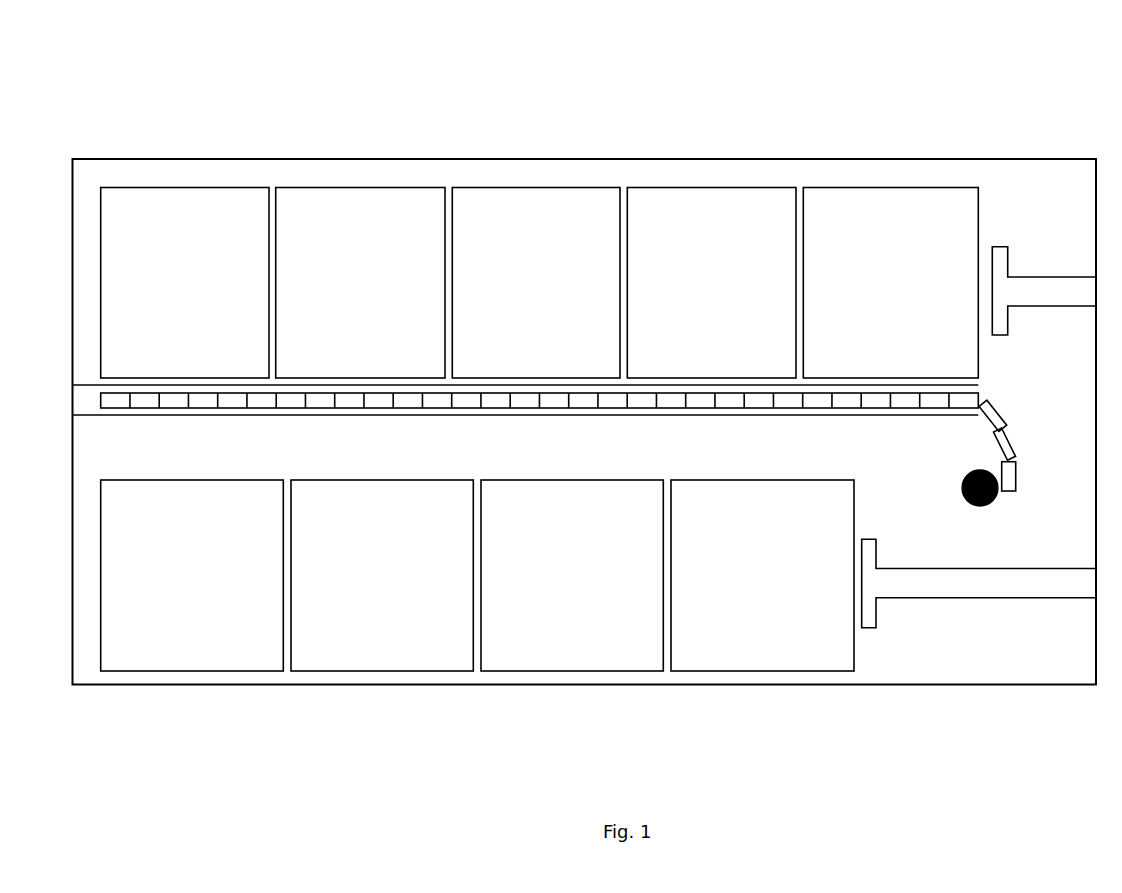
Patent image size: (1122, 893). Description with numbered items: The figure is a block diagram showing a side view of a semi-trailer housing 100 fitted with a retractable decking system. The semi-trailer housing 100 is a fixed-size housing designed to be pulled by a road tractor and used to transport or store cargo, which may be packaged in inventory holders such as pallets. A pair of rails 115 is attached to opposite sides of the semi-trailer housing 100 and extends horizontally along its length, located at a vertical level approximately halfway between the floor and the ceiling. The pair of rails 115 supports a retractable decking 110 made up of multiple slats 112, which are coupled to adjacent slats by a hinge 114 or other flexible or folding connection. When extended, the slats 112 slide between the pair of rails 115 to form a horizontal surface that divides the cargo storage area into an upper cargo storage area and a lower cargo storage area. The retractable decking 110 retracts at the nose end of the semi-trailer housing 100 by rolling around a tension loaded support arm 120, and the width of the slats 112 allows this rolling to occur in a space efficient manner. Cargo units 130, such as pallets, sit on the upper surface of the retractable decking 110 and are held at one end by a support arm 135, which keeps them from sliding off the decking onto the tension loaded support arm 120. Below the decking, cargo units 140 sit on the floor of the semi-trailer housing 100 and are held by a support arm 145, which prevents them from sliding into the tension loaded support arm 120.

The semi-trailer housing 100 is at (154, 78).
The retractable decking 110 is at (996, 429).
The slats 112 is at (997, 402).
The hinge 114 is at (984, 439).
The pair of rails 115 is at (182, 424).
The tension loaded support arm 120 is at (949, 512).
The cargo units 130 is at (158, 226).
The support arm 135 is at (1051, 276).
The cargo units 140 is at (158, 518).
The support arm 145 is at (1050, 568).